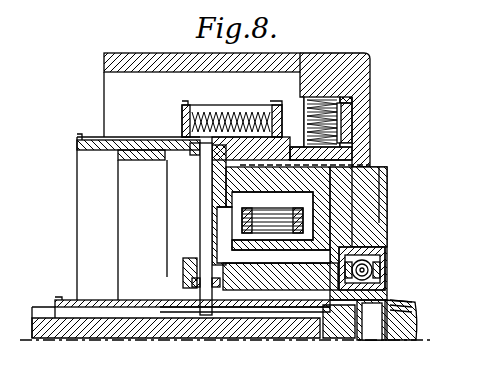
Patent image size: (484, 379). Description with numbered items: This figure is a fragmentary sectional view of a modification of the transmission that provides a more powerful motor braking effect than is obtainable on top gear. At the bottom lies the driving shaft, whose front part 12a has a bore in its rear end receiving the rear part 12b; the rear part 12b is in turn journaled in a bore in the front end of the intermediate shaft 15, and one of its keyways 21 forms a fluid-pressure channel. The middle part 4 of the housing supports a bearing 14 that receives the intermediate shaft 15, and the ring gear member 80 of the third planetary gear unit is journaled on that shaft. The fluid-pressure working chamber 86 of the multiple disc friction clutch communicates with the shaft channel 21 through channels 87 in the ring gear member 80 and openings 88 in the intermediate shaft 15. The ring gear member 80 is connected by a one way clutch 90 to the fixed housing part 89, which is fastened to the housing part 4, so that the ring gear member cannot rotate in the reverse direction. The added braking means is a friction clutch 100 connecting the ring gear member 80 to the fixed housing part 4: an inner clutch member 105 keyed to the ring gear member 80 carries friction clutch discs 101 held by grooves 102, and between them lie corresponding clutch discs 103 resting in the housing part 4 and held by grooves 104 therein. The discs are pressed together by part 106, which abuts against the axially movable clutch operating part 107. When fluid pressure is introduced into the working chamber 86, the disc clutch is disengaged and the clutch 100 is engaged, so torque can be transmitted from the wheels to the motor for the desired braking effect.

The middle part of the housing 4 is at (262, 60).
The friction clutch 100 is at (312, 100).
The pressing part 106 is at (300, 110).
The clutch operating part 107 is at (182, 118).
The grooves 104 is at (348, 98).
The clutch discs 103 is at (345, 112).
The friction clutch discs 101 is at (339, 126).
The grooves 102 is at (352, 144).
The inner clutch member 105 is at (355, 153).
The ring gear member 80 is at (118, 155).
The fluid-pressure working chamber 86 is at (206, 158).
The channels 87 is at (203, 221).
The openings 88 is at (206, 300).
The one way clutch 90 is at (292, 222).
The fixed housing part 89 is at (345, 222).
The bearing 14 is at (373, 270).
The intermediate shaft 15 is at (410, 330).
The front part of the driving shaft 12a is at (62, 300).
The rear part of the driving shaft 12b is at (246, 318).
The keyway 21 is at (106, 322).